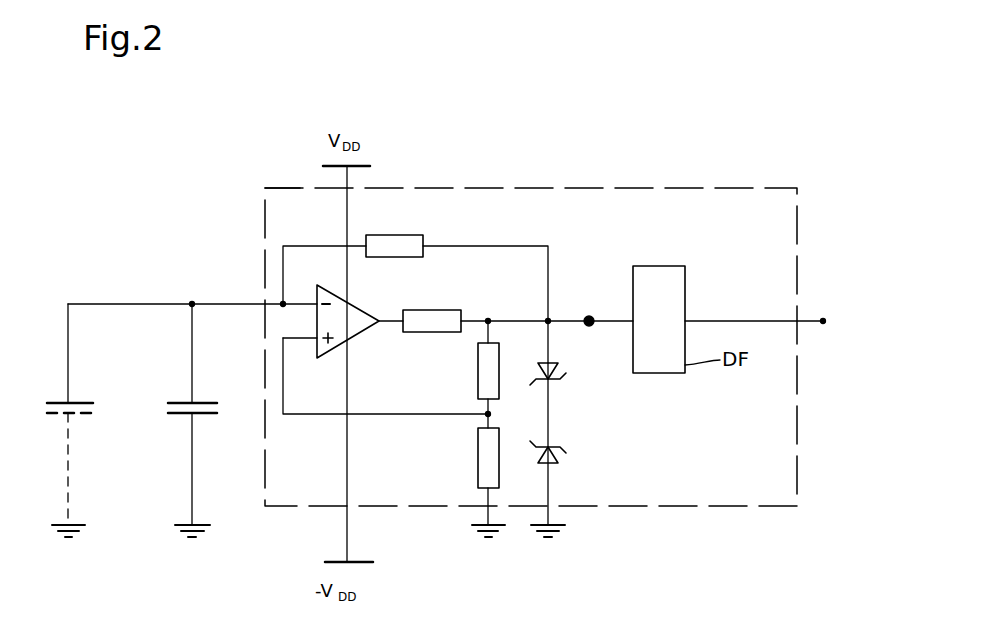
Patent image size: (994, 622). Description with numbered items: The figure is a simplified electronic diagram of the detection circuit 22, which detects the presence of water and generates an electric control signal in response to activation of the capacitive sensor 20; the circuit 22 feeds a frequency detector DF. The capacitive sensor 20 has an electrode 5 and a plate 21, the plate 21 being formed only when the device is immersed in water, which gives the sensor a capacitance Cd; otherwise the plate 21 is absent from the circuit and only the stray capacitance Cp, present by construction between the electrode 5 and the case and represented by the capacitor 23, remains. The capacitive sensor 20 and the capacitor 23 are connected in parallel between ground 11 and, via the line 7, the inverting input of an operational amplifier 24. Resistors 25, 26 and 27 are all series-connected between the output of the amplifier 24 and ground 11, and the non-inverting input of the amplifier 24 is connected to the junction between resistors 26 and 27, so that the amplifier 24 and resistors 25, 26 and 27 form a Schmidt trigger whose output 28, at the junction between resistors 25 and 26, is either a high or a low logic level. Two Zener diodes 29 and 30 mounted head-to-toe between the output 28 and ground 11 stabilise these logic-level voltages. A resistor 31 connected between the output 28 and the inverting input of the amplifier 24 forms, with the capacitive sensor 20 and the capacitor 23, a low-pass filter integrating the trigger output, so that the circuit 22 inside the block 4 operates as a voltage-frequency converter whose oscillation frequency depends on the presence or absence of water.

The evaluation circuit 4 is at (482, 186).
The detection circuit 22 is at (228, 183).
The connecting line 7 is at (95, 303).
The capacitive sensor 20 is at (70, 414).
The electrode 5 is at (78, 402).
The plate 21 is at (85, 414).
The ground 11 is at (76, 524).
The capacitor 23 is at (207, 430).
The operational amplifier 24 is at (366, 313).
The resistor 31 is at (399, 240).
The resistor 25 is at (444, 316).
The resistor 26 is at (485, 373).
The resistor 27 is at (485, 460).
The output 28 is at (591, 313).
The Zener diode 29 is at (562, 376).
The Zener diode 30 is at (561, 456).